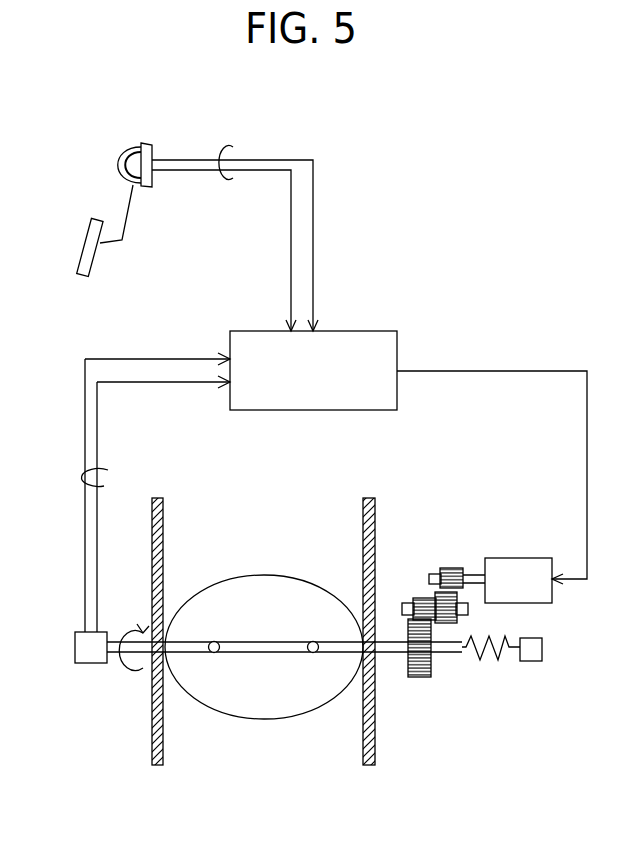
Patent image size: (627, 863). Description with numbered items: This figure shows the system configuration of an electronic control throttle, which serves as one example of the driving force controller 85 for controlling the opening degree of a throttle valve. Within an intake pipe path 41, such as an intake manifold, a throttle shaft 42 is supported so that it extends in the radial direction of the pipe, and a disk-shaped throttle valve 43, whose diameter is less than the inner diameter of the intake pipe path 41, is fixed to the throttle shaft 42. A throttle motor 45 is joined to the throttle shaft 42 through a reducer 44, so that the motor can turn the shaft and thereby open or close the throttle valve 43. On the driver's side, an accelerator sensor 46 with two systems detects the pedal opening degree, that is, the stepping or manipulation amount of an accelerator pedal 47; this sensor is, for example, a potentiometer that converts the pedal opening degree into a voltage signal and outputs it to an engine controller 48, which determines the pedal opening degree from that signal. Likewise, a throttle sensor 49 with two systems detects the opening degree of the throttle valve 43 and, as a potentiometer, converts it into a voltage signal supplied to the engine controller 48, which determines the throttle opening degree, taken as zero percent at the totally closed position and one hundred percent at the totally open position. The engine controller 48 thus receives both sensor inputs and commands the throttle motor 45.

The intake pipe path 41 is at (375, 720).
The throttle shaft 42 is at (273, 647).
The throttle valve 43 is at (232, 697).
The reducer 44 is at (430, 560).
The throttle motor 45 is at (522, 565).
The accelerator sensor 46 is at (128, 150).
The accelerator pedal 47 is at (83, 245).
The engine controller 48 is at (252, 331).
The throttle sensor 49 is at (85, 660).
The driving force controller 85 is at (438, 180).